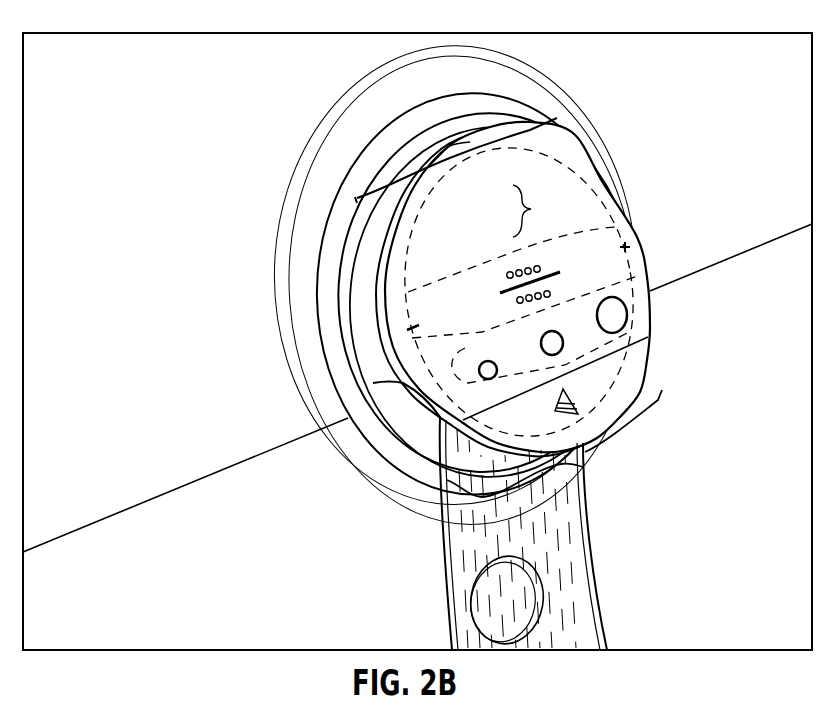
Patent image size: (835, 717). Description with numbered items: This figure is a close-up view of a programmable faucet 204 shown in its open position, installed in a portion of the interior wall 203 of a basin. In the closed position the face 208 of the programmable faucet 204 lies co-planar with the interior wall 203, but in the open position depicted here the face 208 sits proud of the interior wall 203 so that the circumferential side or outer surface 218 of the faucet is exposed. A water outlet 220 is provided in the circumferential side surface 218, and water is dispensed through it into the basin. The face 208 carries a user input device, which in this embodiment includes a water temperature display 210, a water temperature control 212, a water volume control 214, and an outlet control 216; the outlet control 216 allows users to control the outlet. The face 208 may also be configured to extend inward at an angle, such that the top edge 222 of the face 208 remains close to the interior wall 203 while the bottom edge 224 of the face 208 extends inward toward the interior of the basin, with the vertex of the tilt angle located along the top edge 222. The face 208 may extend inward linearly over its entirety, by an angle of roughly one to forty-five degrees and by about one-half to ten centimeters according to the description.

The interior wall 203 is at (760, 98).
The programmable faucet 204 is at (365, 133).
The face 208 is at (707, 132).
The water temperature display 210 is at (531, 209).
The water temperature control 212 is at (398, 300).
The water volume control 214 is at (472, 340).
The outlet control 216 is at (590, 393).
The circumferential side surface 218 is at (375, 372).
The water outlet 220 is at (413, 418).
The top edge 222 is at (447, 147).
The bottom edge 224 is at (452, 488).